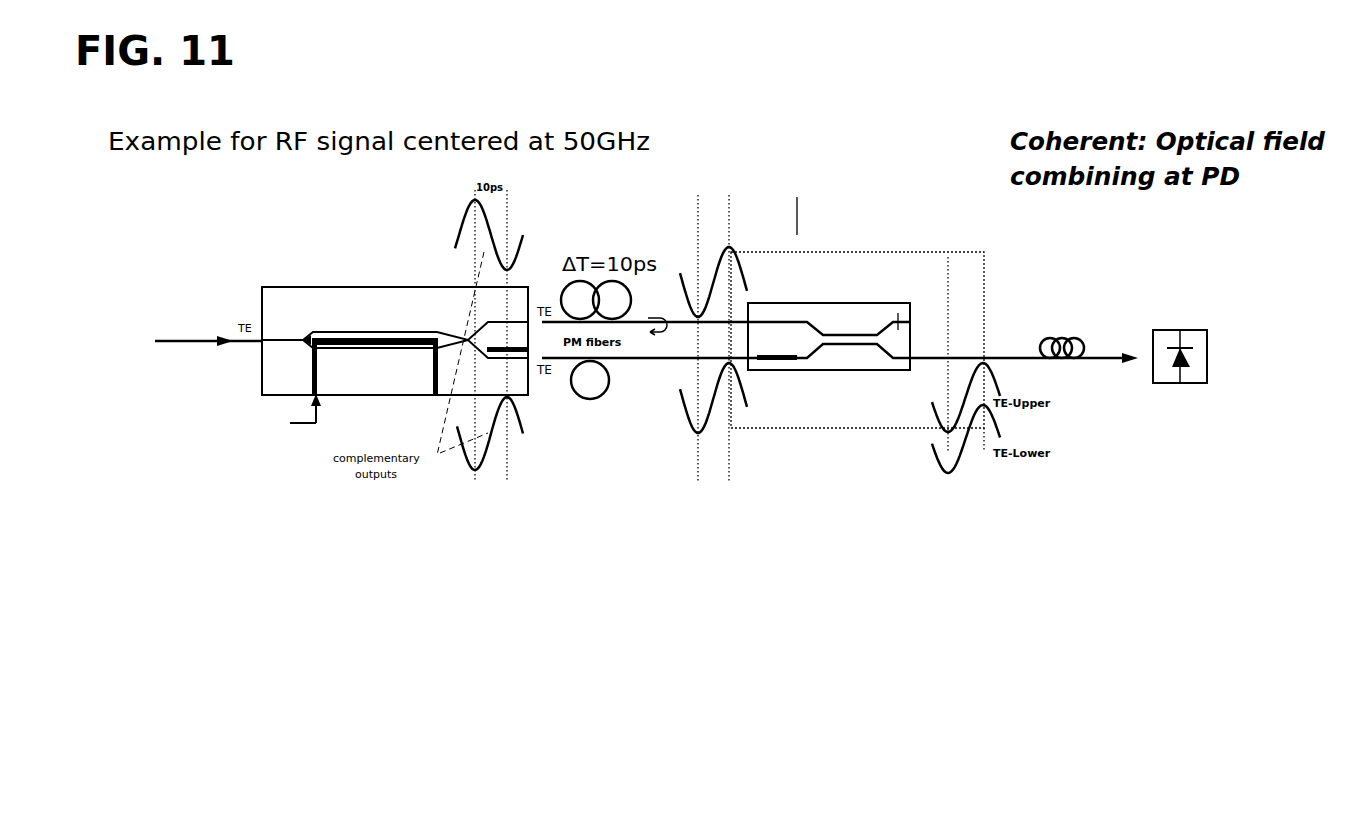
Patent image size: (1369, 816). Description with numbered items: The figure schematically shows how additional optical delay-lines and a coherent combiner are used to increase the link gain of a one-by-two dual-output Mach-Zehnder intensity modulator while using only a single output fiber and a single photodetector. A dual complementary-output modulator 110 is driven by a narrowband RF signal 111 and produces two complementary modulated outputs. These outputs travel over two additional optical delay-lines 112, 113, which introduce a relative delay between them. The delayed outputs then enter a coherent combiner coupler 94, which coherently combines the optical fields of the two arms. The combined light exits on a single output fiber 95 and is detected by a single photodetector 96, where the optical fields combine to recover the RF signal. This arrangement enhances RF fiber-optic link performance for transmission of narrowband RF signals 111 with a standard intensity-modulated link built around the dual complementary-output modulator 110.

The dual complementary-output modulator 110 is at (352, 287).
The narrowband RF signal 111 is at (302, 433).
The additional optical delay-line 112 is at (673, 320).
The additional optical delay-line 113 is at (637, 362).
The coherent combiner coupler 94 is at (838, 252).
The single output fiber 95 is at (1105, 350).
The single photodetector 96 is at (1207, 358).